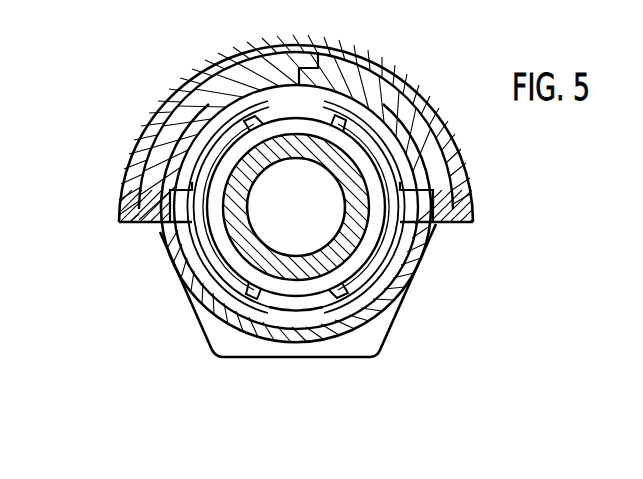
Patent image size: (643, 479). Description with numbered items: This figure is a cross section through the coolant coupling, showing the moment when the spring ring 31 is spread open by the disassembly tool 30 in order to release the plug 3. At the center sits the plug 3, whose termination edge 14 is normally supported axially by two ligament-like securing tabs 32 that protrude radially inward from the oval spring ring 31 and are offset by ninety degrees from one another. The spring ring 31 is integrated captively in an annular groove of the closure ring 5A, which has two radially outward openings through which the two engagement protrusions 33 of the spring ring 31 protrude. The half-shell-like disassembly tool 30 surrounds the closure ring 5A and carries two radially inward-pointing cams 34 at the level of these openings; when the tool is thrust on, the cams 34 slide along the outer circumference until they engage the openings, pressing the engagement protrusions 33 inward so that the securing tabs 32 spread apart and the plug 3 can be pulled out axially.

The plug 3 is at (232, 233).
The termination edge 14 is at (353, 153).
The disassembly tool 30 is at (190, 84).
The spring ring 31 is at (418, 292).
The securing tabs 32 is at (318, 107).
The engagement protrusions 33 is at (131, 160).
The cams 34 is at (163, 203).
The closure ring 5A is at (396, 335).